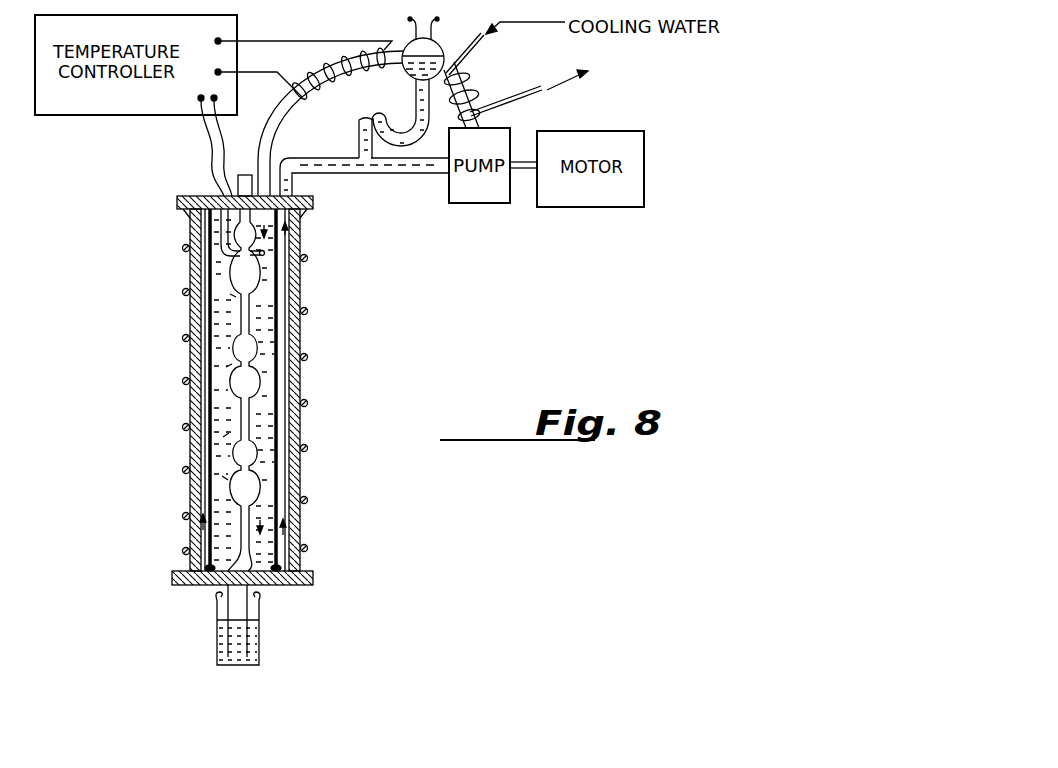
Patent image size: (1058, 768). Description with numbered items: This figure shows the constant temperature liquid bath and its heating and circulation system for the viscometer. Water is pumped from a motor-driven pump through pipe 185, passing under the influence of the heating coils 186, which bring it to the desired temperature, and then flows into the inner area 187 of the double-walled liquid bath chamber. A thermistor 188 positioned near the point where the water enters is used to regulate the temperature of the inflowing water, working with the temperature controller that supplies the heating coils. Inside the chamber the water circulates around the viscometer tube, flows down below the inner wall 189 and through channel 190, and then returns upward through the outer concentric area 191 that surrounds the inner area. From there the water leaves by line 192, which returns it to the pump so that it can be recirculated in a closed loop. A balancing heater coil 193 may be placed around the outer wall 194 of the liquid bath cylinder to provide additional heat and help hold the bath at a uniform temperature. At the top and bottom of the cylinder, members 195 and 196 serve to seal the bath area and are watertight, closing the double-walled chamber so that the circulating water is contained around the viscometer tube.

The pipe 185 is at (384, 60).
The heating coils 186 is at (346, 78).
The inner area 187 is at (270, 241).
The thermistor 188 is at (261, 262).
The inner wall 189 is at (276, 478).
The channel 190 is at (275, 586).
The outer concentric area 191 is at (283, 501).
The line 192 is at (387, 170).
The balancing heater coil 193 is at (303, 443).
The outer wall 194 is at (298, 383).
The sealing member 195 is at (190, 579).
The sealing member 196 is at (202, 196).